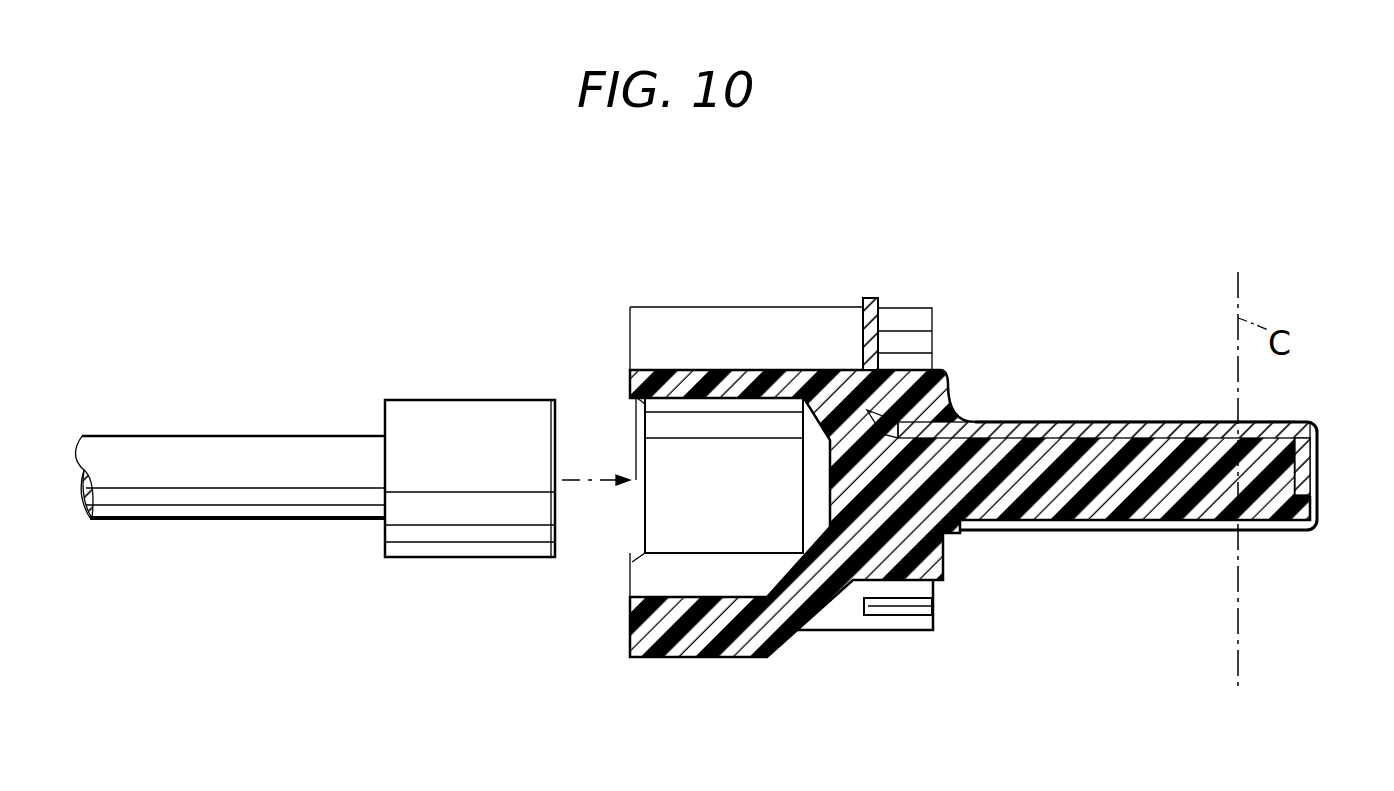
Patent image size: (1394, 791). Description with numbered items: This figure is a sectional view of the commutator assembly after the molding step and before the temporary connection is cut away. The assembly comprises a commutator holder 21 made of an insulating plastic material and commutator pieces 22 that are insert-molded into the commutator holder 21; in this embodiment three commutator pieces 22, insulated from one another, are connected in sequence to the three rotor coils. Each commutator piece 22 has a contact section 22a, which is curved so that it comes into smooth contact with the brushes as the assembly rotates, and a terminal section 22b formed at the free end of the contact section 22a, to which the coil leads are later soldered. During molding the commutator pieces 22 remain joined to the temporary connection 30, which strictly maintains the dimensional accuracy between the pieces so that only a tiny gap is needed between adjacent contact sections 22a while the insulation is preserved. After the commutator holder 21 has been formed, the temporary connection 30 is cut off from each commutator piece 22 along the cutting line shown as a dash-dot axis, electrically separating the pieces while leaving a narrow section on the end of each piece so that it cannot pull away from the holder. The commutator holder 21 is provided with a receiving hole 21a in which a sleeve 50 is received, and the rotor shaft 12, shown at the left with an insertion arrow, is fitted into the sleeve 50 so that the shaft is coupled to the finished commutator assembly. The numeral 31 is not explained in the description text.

The rotor shaft 12 is at (233, 472).
The sleeve 50 is at (456, 422).
The commutator holder 21 is at (1068, 497).
The receiving hole 21a is at (680, 552).
The commutator piece 22 is at (1072, 415).
The contact section 22a is at (1003, 424).
The terminal section 22b is at (871, 298).
The temporary connection 30 is at (1318, 457).
The sleeve end portion 31 is at (1146, 420).